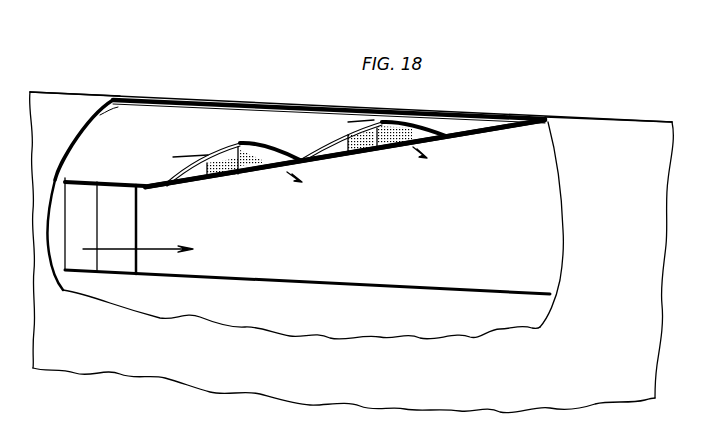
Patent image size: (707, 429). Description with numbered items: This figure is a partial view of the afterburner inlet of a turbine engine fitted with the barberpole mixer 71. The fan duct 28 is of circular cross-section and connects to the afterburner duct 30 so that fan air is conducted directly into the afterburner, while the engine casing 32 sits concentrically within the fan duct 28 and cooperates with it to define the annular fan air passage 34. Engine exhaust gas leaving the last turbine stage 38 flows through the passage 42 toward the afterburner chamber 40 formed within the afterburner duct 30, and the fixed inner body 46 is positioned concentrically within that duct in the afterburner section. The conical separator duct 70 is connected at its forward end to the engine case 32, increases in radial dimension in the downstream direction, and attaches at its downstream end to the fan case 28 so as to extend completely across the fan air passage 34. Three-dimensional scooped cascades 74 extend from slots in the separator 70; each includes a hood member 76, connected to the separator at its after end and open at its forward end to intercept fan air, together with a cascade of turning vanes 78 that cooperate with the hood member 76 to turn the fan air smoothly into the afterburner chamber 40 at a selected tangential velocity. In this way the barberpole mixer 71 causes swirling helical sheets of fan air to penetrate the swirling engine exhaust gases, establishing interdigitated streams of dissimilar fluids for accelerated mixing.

The fan duct 28 is at (70, 92).
The afterburner duct 30 is at (648, 100).
The engine casing 32 is at (68, 150).
The annular fan air passage 34 is at (118, 99).
The last stage of turbine section 38 is at (122, 227).
The afterburner chamber 40 is at (634, 230).
The passage 42 is at (87, 227).
The fixed inner body 46 is at (356, 323).
The conical separator duct 70 is at (490, 135).
The barberpole mixer 71 is at (260, 132).
The three-dimensional scooped cascades 74 is at (272, 150).
The hood member 76 is at (210, 157).
The turning vanes 78 is at (382, 150).